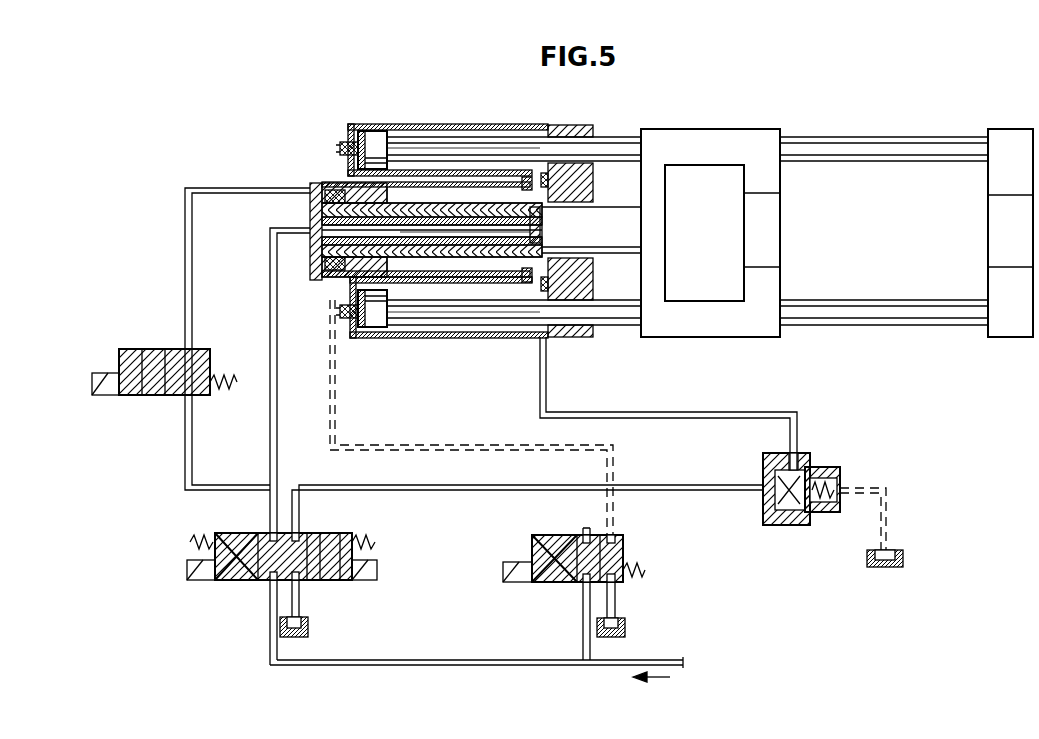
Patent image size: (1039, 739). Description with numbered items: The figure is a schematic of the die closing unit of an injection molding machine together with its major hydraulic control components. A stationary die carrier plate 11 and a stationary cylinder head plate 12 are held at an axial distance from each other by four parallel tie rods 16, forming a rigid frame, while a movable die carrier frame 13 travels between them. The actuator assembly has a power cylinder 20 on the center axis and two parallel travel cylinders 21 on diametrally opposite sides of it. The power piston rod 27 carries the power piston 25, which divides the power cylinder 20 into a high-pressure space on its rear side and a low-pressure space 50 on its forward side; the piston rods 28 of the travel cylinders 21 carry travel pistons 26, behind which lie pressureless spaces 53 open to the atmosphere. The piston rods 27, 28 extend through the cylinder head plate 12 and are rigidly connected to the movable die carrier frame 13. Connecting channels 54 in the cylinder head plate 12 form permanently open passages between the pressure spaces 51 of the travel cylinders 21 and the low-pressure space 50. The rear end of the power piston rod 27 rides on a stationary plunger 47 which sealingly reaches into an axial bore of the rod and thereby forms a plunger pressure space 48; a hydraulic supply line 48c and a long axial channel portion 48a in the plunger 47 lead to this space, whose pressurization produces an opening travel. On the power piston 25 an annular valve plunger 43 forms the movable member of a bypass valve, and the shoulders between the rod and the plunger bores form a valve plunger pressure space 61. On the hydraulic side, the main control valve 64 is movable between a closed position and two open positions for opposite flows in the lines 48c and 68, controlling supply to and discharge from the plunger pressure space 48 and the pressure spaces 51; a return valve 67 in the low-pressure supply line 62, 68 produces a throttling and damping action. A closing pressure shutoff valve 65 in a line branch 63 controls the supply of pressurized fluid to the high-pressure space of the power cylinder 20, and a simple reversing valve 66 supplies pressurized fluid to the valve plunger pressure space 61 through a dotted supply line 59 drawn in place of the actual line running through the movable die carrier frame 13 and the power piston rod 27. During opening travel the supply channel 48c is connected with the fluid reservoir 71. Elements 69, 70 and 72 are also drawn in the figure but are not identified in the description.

The stationary die carrier plate 11 is at (1013, 140).
The stationary cylinder head plate 12 is at (560, 125).
The movable die carrier frame 13 is at (716, 127).
The tie rods 16 is at (887, 307).
The power cylinder 20 is at (332, 188).
The travel cylinders 21 is at (441, 128).
The power piston 25 is at (340, 310).
The travel pistons 26 is at (372, 140).
The power piston rod 27 is at (621, 240).
The piston rods 28 is at (475, 150).
The annular valve plunger 43 is at (322, 195).
The stationary plunger 47 is at (312, 215).
The plunger pressure space 48 is at (518, 300).
The long axial channel portion 48a is at (494, 262).
The hydraulic supply line 48c is at (270, 283).
The low-pressure space 50 is at (402, 312).
The pressure spaces 51 is at (406, 135).
The pressureless spaces 53 is at (346, 142).
The connecting channels 54 is at (548, 168).
The dotted supply line 59 is at (330, 422).
The valve plunger pressure space 61 is at (318, 278).
The low-pressure supply line 62 is at (710, 412).
The line branch 63 is at (185, 250).
The main control valve 64 is at (238, 581).
The closing pressure shutoff valve 65 is at (165, 396).
The reversing valve 66 is at (558, 583).
The return valve 67 is at (778, 490).
The line 68 is at (460, 490).
The pressure line 69 is at (455, 665).
The tank 70 is at (889, 567).
The fluid reservoir 71 is at (308, 628).
The tank 72 is at (625, 628).